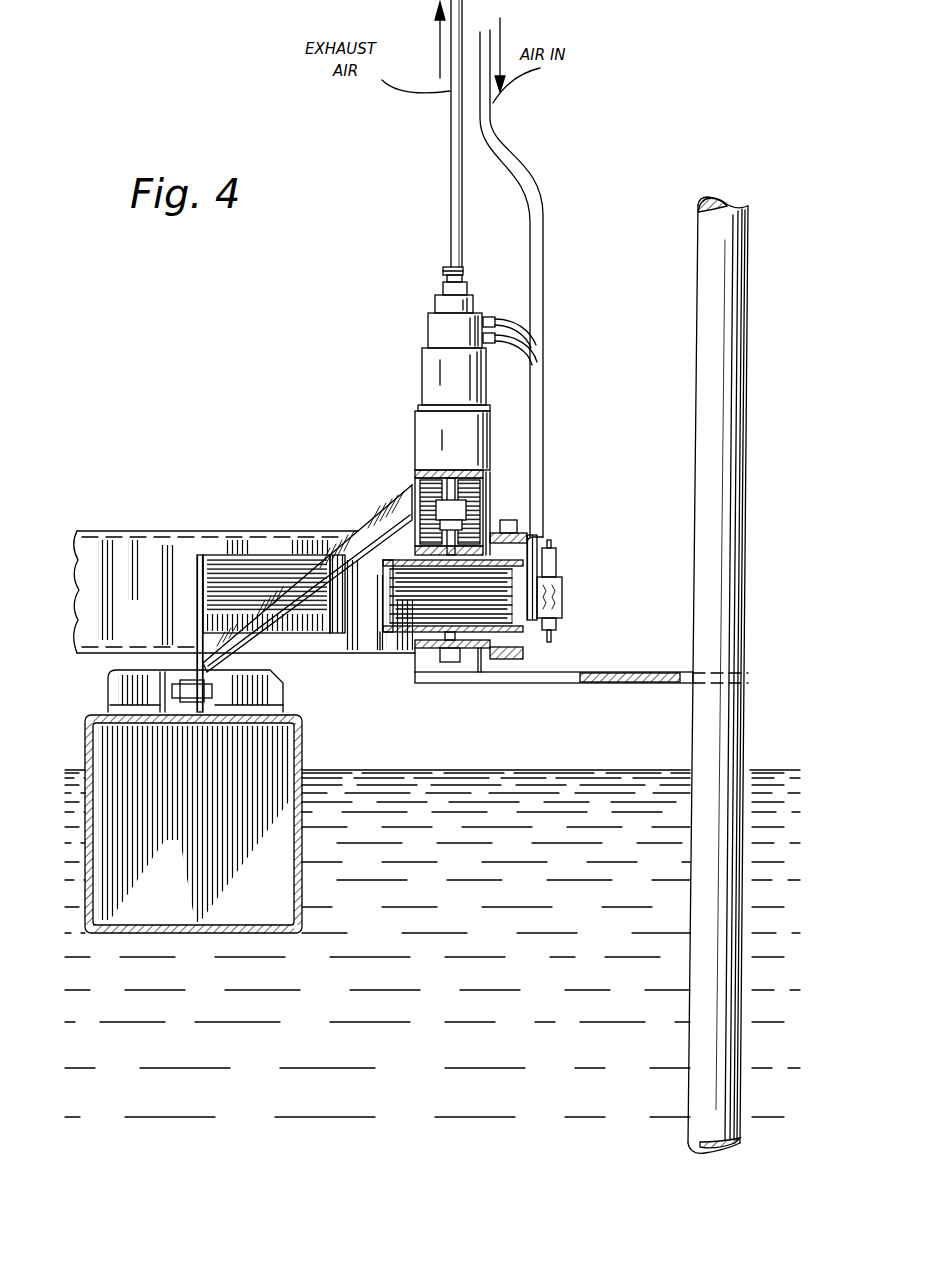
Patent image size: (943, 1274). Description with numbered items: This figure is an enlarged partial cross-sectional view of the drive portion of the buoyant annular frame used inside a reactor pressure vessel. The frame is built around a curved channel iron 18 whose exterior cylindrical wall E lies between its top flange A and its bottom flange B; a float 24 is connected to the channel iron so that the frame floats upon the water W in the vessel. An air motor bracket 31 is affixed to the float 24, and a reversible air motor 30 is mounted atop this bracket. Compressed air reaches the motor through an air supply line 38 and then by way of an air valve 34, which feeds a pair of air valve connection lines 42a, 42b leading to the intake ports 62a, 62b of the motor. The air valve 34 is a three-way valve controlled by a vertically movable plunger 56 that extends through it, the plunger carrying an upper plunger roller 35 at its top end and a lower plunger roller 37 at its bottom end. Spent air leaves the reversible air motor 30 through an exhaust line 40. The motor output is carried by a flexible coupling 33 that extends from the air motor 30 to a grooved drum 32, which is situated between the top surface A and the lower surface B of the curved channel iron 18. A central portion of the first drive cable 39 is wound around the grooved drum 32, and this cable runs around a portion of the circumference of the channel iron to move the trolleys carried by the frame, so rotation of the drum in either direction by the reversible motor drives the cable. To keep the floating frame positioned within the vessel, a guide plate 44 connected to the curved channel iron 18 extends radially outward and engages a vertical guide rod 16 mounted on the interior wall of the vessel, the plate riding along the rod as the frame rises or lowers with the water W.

The vertical guide rod 16 is at (730, 397).
The curved channel iron 18 is at (118, 528).
The float 24 is at (305, 757).
The reversible air motor 30 is at (430, 385).
The air motor bracket 31 is at (380, 507).
The grooved drum 32 is at (410, 627).
The flexible coupling 33 is at (450, 492).
The air valve 34 is at (563, 597).
The upper plunger roller 35 is at (550, 545).
The lower plunger roller 37 is at (549, 642).
The air supply line 38 is at (519, 174).
The first drive cable 39 is at (387, 586).
The exhaust line 40 is at (450, 162).
The air valve connection line 42a is at (505, 322).
The air valve connection line 42b is at (505, 338).
The guide plate 44 is at (623, 687).
The plunger 56 is at (557, 632).
The intake port 62a is at (488, 317).
The intake port 62b is at (497, 343).
The exterior cylindrical wall E is at (177, 565).
The top flange A is at (249, 529).
The bottom flange B is at (107, 655).
The water W is at (512, 795).